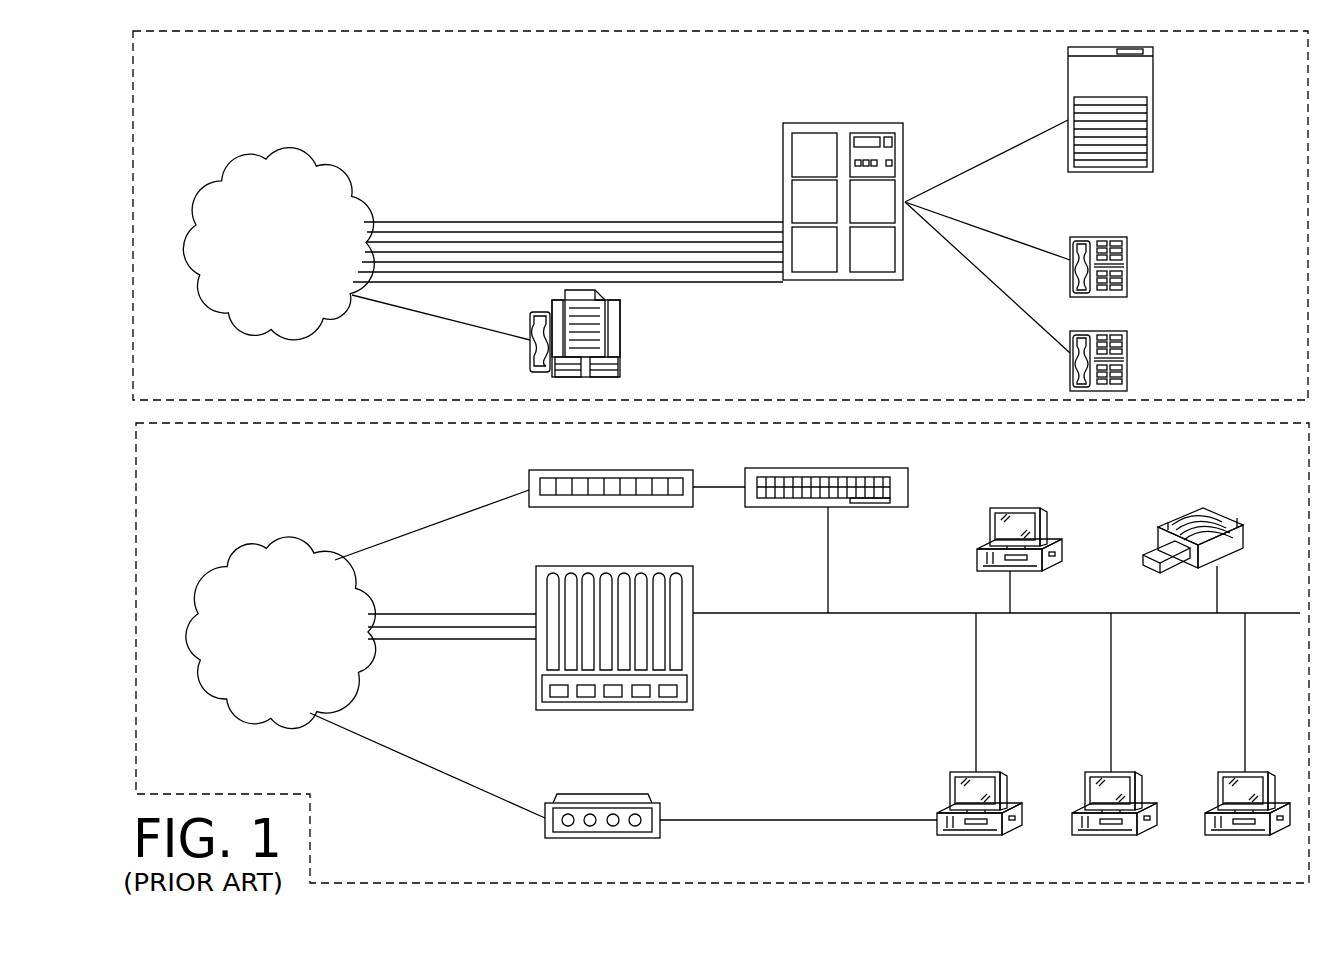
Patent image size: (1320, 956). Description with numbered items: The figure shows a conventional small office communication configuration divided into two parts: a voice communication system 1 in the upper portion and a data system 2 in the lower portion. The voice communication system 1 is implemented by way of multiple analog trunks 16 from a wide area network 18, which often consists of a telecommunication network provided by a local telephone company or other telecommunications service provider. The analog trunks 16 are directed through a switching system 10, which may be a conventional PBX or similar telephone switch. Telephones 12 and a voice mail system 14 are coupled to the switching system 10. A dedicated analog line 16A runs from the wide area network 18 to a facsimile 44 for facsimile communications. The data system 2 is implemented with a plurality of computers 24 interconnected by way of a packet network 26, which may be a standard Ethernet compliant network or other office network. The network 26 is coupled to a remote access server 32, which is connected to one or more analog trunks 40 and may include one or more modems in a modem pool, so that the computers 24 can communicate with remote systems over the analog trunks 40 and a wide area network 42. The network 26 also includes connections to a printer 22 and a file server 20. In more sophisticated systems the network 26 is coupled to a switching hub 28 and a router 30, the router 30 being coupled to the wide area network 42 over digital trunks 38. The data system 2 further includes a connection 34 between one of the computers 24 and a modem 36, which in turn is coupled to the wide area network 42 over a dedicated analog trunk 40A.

The voice communication system 1 is at (210, 86).
The data system 2 is at (210, 478).
The switching system 10 is at (867, 123).
The telephones 12 is at (1127, 263).
The voice mail system 14 is at (1157, 77).
The multiple analog trunks 16 is at (473, 220).
The dedicated analog line 16A is at (463, 325).
The wide area network 18 is at (315, 158).
The file server 20 is at (1055, 563).
The printer 22 is at (1233, 550).
The computers 24 is at (975, 835).
The packet network 26 is at (860, 611).
The switching hub 28 is at (820, 463).
The router 30 is at (605, 465).
The remote access server 32 is at (693, 650).
The modem connection line 34 is at (832, 818).
The modem 36 is at (660, 830).
The digital trunks 38 is at (447, 520).
The analog trunks 40 is at (395, 612).
The dedicated analog trunk 40A is at (417, 763).
The wide area network 42 is at (233, 708).
The facsimile 44 is at (622, 315).